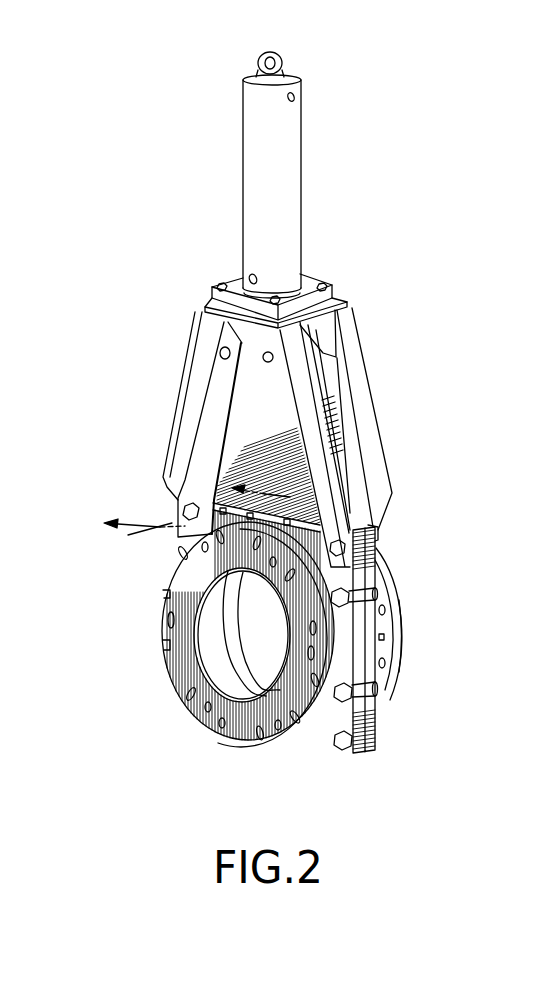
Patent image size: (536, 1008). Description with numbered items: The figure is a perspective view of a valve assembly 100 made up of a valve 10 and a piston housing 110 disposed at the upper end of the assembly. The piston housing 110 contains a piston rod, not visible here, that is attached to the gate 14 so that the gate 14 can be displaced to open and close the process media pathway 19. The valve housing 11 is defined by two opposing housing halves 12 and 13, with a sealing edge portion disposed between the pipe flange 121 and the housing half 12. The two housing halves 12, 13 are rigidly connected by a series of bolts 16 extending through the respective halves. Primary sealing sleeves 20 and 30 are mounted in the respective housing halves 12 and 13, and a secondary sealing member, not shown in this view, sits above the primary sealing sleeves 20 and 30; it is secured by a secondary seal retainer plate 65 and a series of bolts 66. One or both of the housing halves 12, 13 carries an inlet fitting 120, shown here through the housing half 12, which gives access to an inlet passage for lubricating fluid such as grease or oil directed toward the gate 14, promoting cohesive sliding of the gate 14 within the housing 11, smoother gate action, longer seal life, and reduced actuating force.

The valve assembly 100 is at (383, 121).
The piston housing 110 is at (285, 184).
The inlet fitting 120 is at (213, 480).
The gate 14 is at (275, 432).
The valve 10 is at (146, 560).
The valve housing 11 is at (368, 759).
The housing half 12 is at (320, 746).
The pipe flange 121 is at (235, 746).
The housing half 13 is at (375, 722).
The bolts 16 is at (345, 676).
The process media pathway 19 is at (219, 647).
The primary sealing sleeve 20 is at (235, 681).
The primary sealing sleeve 30 is at (255, 619).
The secondary seal retainer plate 65 is at (265, 502).
The bolts 66 is at (292, 522).